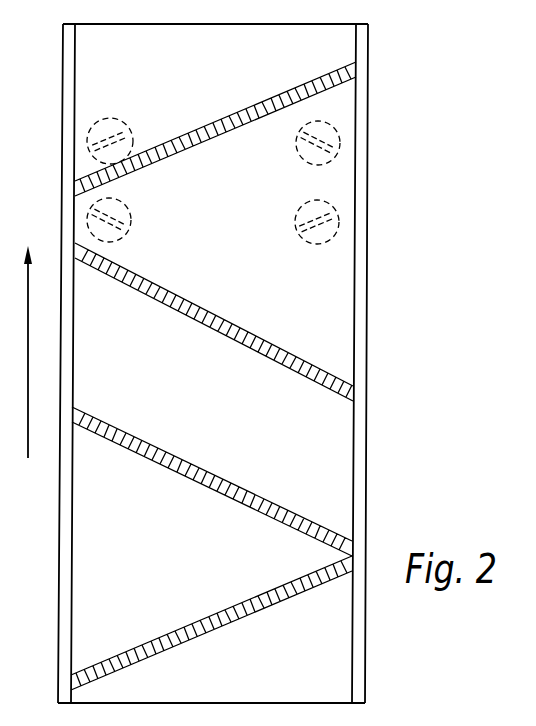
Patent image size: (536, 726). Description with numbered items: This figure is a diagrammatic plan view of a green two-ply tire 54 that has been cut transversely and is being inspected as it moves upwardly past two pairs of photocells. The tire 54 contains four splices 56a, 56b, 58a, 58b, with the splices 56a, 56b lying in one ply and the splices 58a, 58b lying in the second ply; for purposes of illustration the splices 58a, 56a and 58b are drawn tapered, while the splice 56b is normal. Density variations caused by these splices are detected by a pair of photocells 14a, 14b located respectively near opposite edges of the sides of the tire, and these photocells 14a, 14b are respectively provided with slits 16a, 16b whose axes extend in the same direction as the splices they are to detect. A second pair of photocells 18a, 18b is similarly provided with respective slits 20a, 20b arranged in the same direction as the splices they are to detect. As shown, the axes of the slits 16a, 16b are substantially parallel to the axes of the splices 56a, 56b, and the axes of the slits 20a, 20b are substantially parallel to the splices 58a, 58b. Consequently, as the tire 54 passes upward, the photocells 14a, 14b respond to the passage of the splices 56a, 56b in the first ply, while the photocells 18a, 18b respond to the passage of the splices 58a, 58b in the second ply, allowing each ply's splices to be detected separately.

The photocell 14a is at (127, 207).
The photocell 14b is at (299, 129).
The slit 16a is at (130, 225).
The slit 16b is at (303, 157).
The photocell 18a is at (297, 212).
The photocell 18b is at (107, 119).
The slit 20a is at (306, 238).
The slit 20b is at (133, 136).
The green two-ply tire 54 is at (368, 139).
The splice 56a is at (250, 333).
The splice 56b is at (192, 462).
The splice 58a is at (160, 638).
The splice 58b is at (260, 100).